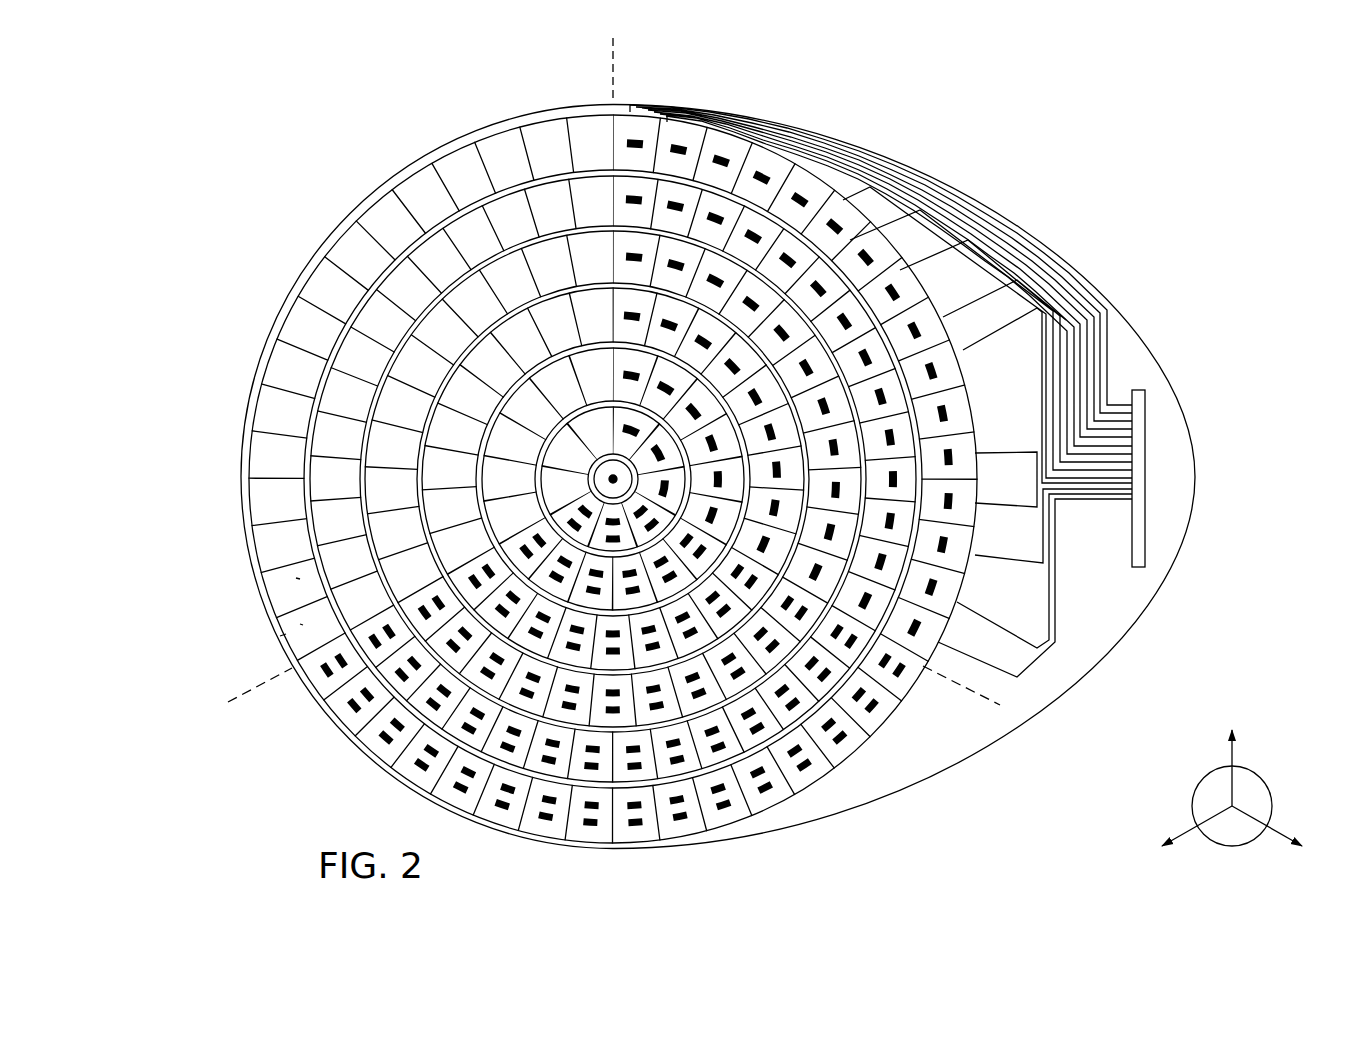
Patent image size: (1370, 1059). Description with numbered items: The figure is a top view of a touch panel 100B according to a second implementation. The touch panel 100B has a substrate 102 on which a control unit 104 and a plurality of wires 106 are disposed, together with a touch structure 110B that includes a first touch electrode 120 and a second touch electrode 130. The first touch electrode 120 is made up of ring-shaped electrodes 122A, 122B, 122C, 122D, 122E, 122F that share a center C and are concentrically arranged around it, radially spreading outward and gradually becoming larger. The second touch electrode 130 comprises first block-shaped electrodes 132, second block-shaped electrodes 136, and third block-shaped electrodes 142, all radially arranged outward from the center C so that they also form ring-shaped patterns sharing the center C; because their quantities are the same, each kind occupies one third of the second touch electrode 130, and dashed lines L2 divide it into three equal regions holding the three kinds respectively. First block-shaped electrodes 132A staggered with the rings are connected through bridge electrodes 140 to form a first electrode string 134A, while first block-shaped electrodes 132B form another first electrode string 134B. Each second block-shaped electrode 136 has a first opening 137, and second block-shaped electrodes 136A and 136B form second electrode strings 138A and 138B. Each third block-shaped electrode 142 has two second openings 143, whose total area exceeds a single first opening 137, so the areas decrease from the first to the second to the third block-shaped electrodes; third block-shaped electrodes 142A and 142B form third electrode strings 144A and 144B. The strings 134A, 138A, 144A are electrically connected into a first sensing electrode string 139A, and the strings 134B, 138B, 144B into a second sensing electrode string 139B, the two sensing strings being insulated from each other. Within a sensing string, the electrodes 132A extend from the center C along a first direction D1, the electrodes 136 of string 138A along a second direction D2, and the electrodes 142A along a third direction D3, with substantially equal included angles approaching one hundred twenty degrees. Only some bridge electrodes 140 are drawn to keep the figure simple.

The touch panel 100B is at (165, 121).
The substrate 102 is at (1168, 540).
The control unit 104 is at (1147, 408).
The wires 106 is at (1108, 343).
The touch structure 110B is at (330, 774).
The first touch electrode 120 is at (138, 233).
The ring-shaped electrode 122A is at (575, 455).
The ring-shaped electrode 122B is at (540, 420).
The ring-shaped electrode 122C is at (490, 380).
The ring-shaped electrode 122D is at (445, 340).
The ring-shaped electrode 122E is at (405, 300).
The ring-shaped electrode 122F is at (372, 244).
The second touch electrode 130 is at (1058, 68).
The first block-shaped electrode 132 is at (1086, 79).
The first block-shaped electrode 132A is at (300, 624).
The first block-shaped electrode 132B is at (262, 587).
The first electrode string 134A is at (282, 636).
The first electrode string 134B is at (296, 578).
The second block-shaped electrode 136 is at (766, 170).
The second block-shaped electrode 136A is at (627, 146).
The second block-shaped electrode 136B is at (684, 147).
The first opening 137 is at (784, 177).
The second electrode string 138A is at (628, 112).
The second electrode string 138B is at (677, 112).
The first sensing electrode string 139A is at (1253, 68).
The second sensing electrode string 139B is at (1253, 173).
The bridge electrode 140 is at (850, 692).
The third block-shaped electrode 142 is at (736, 816).
The third block-shaped electrode 142A is at (917, 668).
The third block-shaped electrode 142B is at (880, 722).
The second opening 143 is at (760, 827).
The third electrode string 144A is at (920, 694).
The third electrode string 144B is at (904, 718).
The center C is at (606, 480).
The dashed lines L2 is at (611, 75).
The first direction D1 is at (1172, 840).
The second direction D2 is at (1232, 769).
The third direction D3 is at (1291, 840).